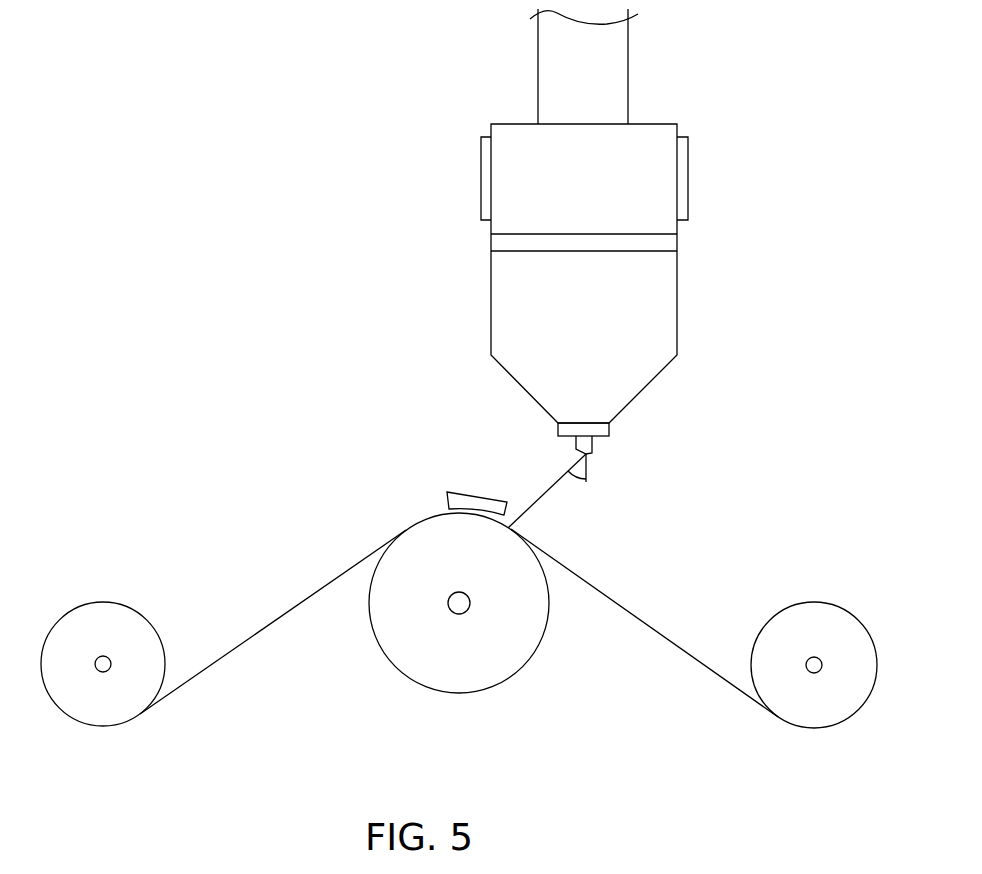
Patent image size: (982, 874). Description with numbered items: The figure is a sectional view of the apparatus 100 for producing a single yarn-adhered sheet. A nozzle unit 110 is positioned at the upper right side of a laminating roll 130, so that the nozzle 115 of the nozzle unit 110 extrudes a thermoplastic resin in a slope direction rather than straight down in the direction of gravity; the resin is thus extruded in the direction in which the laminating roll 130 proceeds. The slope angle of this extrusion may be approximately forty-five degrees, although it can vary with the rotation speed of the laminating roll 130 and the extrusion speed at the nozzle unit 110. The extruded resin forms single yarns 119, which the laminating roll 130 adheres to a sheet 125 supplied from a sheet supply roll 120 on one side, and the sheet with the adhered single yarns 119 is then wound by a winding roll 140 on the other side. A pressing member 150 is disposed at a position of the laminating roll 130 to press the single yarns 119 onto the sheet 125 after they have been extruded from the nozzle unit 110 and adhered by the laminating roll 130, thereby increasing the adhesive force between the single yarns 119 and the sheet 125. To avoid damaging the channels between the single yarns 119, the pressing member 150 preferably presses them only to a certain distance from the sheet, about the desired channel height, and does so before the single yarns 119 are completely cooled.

The apparatus for producing a single yarn-adhered sheet 100 is at (287, 80).
The nozzle unit 110 is at (503, 295).
The nozzle 115 is at (610, 427).
The single yarns 119 is at (545, 491).
The sheet supply roll 120 is at (810, 620).
The sheet 125 is at (637, 618).
The laminating roll 130 is at (458, 673).
The winding roll 140 is at (105, 613).
The pressing member 150 is at (460, 498).